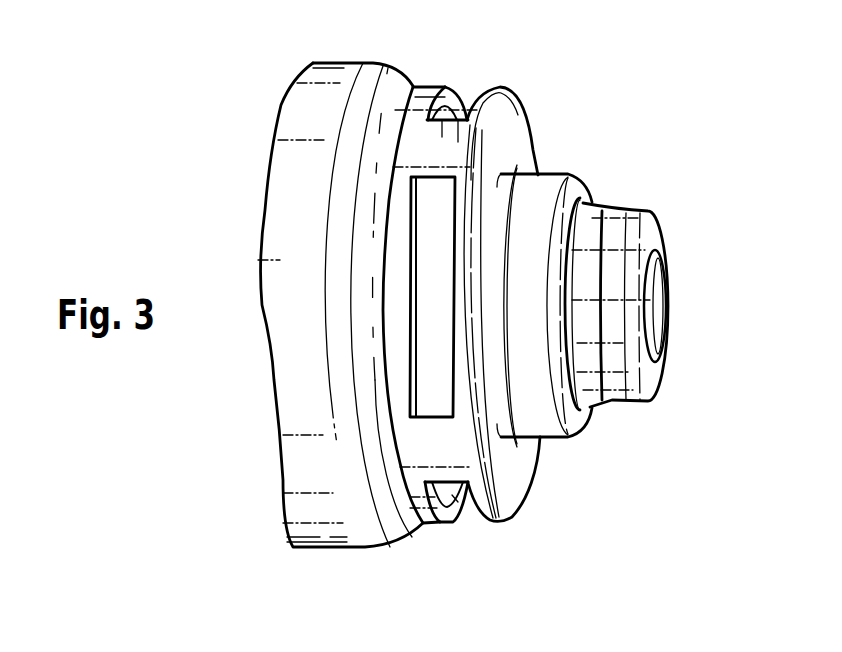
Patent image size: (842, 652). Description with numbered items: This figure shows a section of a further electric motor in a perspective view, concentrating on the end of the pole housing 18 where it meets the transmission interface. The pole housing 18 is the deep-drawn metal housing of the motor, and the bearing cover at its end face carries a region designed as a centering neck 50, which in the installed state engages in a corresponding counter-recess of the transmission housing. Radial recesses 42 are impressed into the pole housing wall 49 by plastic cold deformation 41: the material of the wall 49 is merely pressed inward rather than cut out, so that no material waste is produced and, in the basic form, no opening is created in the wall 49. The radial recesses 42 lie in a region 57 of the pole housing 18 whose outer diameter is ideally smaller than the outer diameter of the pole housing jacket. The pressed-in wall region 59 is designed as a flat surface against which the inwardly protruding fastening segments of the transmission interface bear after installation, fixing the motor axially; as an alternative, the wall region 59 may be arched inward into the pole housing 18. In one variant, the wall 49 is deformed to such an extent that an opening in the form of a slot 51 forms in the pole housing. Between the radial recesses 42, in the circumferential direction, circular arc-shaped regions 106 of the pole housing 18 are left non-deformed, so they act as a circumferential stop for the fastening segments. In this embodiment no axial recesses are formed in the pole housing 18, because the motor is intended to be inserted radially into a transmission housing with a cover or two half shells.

The radial recess 42 is at (340, 282).
The plastic cold deformation 41 is at (413, 83).
The pole housing 18 is at (437, 207).
The circular arc-shaped regions 106 is at (468, 112).
The centering neck 50 is at (527, 203).
The pole housing wall 49 is at (400, 393).
The region 57 is at (432, 452).
The slot 51 is at (465, 495).
The pressed-in wall region 59 is at (433, 355).